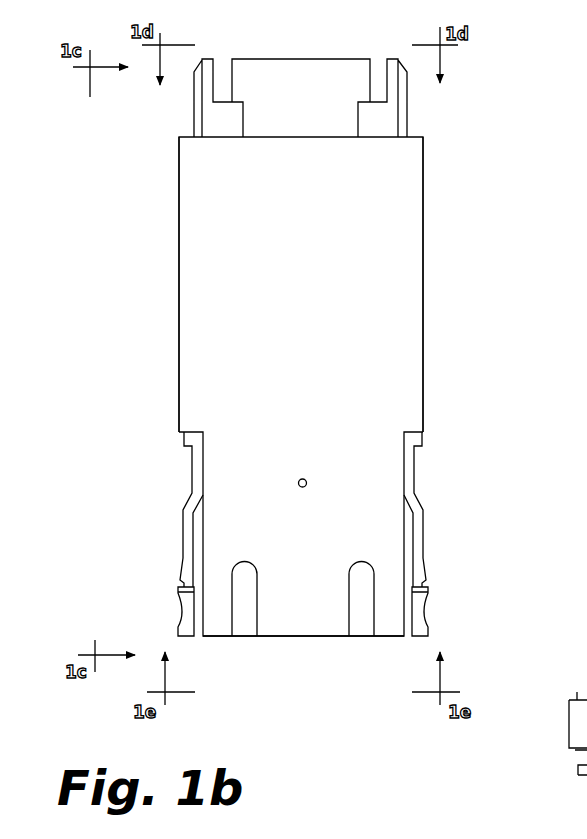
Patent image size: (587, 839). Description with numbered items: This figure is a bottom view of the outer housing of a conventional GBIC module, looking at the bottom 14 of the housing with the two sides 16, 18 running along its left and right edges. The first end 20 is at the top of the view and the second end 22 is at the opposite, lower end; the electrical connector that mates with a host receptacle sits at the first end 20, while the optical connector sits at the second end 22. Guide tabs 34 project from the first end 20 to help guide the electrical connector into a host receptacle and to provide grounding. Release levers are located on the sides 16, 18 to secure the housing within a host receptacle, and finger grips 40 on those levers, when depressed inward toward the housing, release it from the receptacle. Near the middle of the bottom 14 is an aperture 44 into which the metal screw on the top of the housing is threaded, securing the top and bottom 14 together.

The bottom 14 is at (367, 265).
The side 16 is at (180, 308).
The side 18 is at (423, 215).
The first end 20 is at (306, 59).
The second end 22 is at (305, 636).
The guide tabs 34 is at (407, 112).
The finger grips 40 is at (440, 612).
The aperture 44 is at (305, 479).